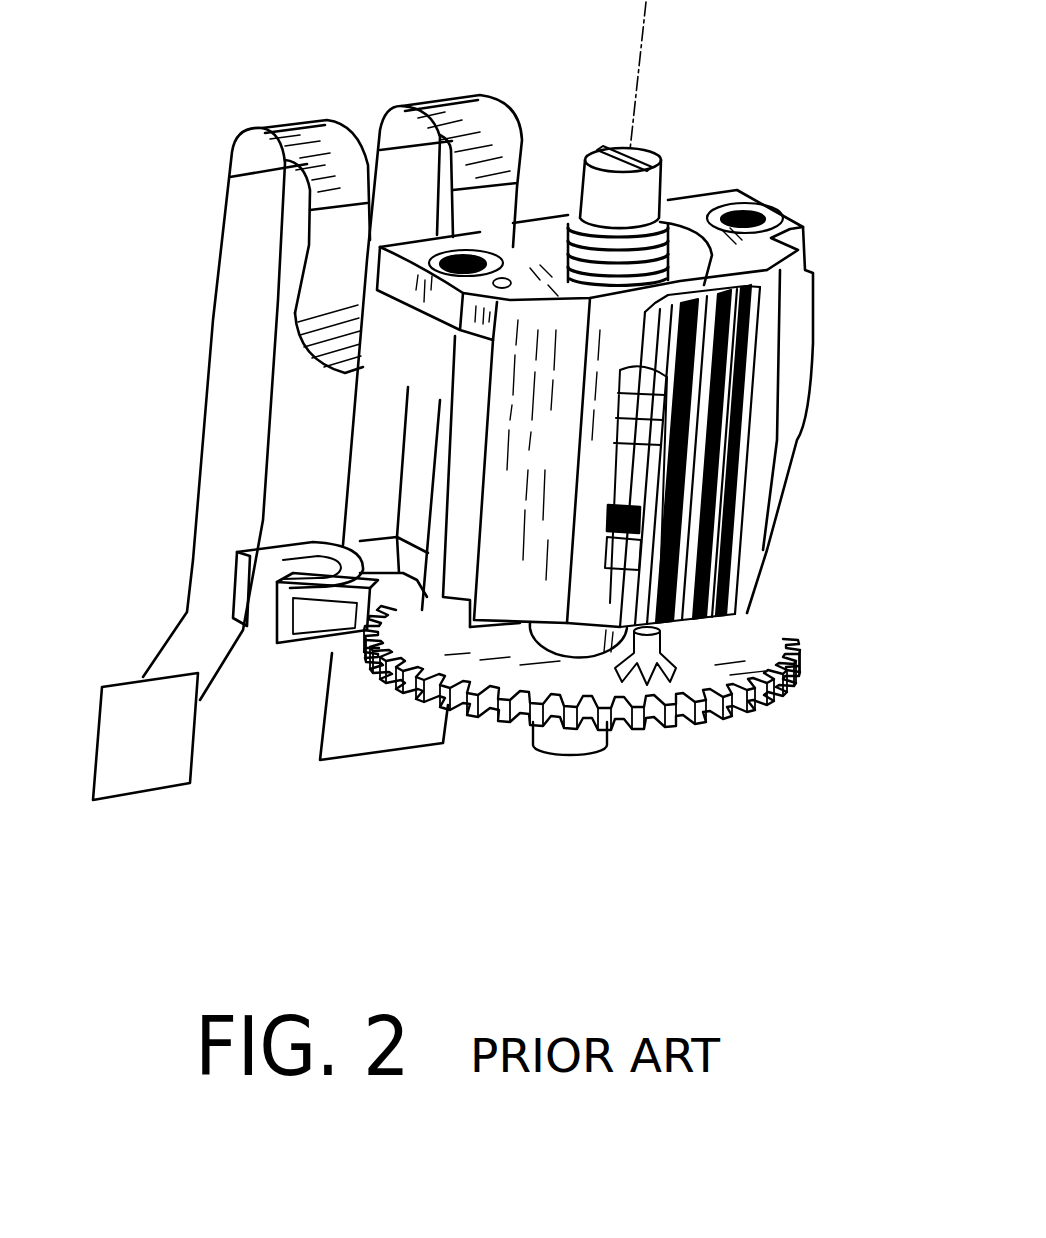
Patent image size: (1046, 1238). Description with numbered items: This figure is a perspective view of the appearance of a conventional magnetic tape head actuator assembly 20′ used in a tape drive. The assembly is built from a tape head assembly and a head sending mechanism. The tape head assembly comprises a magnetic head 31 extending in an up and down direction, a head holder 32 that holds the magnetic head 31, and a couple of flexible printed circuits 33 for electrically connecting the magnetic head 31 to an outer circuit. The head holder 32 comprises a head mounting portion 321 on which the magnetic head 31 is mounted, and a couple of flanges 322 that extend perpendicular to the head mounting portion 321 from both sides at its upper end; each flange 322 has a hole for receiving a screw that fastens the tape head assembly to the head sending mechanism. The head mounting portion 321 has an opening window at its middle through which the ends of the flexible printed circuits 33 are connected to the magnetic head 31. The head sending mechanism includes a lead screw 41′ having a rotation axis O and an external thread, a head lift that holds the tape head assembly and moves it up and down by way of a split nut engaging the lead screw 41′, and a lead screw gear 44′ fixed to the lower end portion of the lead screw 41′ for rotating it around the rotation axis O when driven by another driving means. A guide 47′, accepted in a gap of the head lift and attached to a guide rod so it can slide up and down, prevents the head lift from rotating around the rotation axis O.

The magnetic tape head actuator assembly 20′ is at (668, 795).
The magnetic head 31 is at (760, 417).
The head holder 32 is at (767, 470).
The head mounting portion 321 is at (770, 350).
The flanges 322 is at (480, 242).
The flexible printed circuits 33 is at (380, 128).
The lead screw 41′ is at (668, 222).
The lead screw gear 44′ is at (797, 687).
The guide 47′ is at (298, 643).
The rotation axis O is at (645, 62).